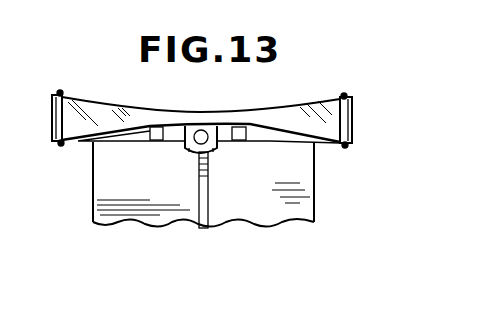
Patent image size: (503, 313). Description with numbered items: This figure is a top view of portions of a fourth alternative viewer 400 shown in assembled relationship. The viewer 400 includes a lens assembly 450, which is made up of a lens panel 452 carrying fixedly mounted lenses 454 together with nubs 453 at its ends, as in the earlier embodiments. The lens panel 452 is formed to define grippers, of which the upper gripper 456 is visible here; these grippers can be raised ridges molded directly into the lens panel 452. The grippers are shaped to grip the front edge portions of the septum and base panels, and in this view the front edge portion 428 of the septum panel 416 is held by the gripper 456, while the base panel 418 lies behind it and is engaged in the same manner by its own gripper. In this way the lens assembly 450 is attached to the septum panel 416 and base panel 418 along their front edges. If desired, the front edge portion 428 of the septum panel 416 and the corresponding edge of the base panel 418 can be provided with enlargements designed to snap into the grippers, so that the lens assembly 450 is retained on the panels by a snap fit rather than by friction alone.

The fourth alternative viewer 400 is at (80, 200).
The septum panel 416 is at (168, 224).
The base panel 418 is at (308, 173).
The front edge portion of the septum panel 428 is at (210, 154).
The lens assembly 450 is at (236, 106).
The lens panel 452 is at (201, 111).
The nubs 453 is at (60, 92).
The lenses 454 is at (97, 118).
The upper gripper 456 is at (186, 143).